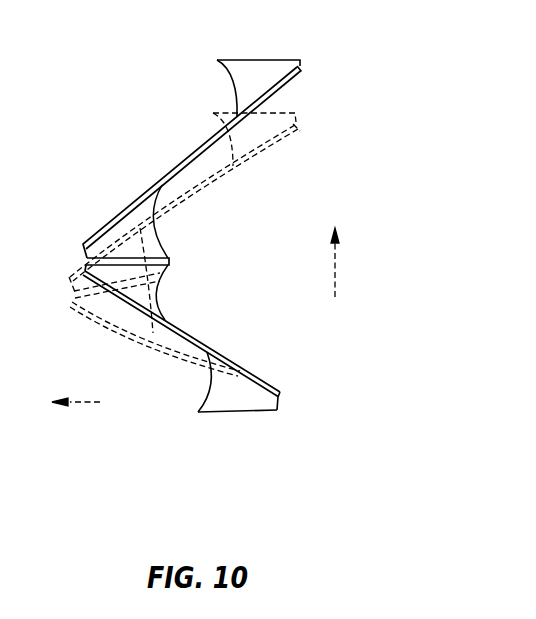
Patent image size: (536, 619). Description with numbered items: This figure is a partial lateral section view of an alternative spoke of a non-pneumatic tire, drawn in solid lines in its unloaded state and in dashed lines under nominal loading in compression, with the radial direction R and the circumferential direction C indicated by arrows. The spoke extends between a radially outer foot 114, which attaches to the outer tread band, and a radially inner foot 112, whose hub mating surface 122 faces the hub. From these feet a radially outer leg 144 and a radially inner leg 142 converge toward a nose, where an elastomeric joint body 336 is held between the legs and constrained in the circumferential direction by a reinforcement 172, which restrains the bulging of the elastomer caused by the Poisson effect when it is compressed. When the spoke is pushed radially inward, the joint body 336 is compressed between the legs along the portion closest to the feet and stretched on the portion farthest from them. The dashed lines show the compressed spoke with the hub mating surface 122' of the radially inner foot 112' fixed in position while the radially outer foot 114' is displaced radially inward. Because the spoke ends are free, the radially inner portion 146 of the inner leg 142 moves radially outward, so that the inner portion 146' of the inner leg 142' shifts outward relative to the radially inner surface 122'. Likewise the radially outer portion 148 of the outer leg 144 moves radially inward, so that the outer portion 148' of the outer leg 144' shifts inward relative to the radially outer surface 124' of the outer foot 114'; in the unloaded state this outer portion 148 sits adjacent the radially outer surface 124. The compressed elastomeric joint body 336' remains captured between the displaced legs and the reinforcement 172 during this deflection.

The radially outer surface 124 is at (284, 46).
The radially outer portion of the radially outer leg 148 is at (342, 73).
The radially outer foot 114 is at (198, 88).
The radially outer leg 144 is at (192, 162).
The elastomeric joint body 336 is at (195, 221).
The reinforcement 172 is at (170, 262).
The radially inner leg 142 is at (181, 334).
The hub mating surface 122 is at (237, 446).
The radially inner foot 112 is at (245, 420).
The radially inner portion of the radially inner leg 146 is at (295, 425).
The radially outer surface 124' is at (296, 121).
The radially outer portion of the radially outer leg 148' is at (322, 149).
The radially outer foot 114' is at (265, 157).
The radially outer leg 144' is at (183, 208).
The elastomeric joint body 336' is at (106, 300).
The radially inner leg 142' is at (155, 343).
The radially inner foot 112' is at (167, 391).
The radially inner surface 122' is at (178, 432).
The radially inner portion of the radially inner leg 146' is at (312, 371).
The radial direction R is at (336, 263).
The circumferential direction C is at (82, 405).